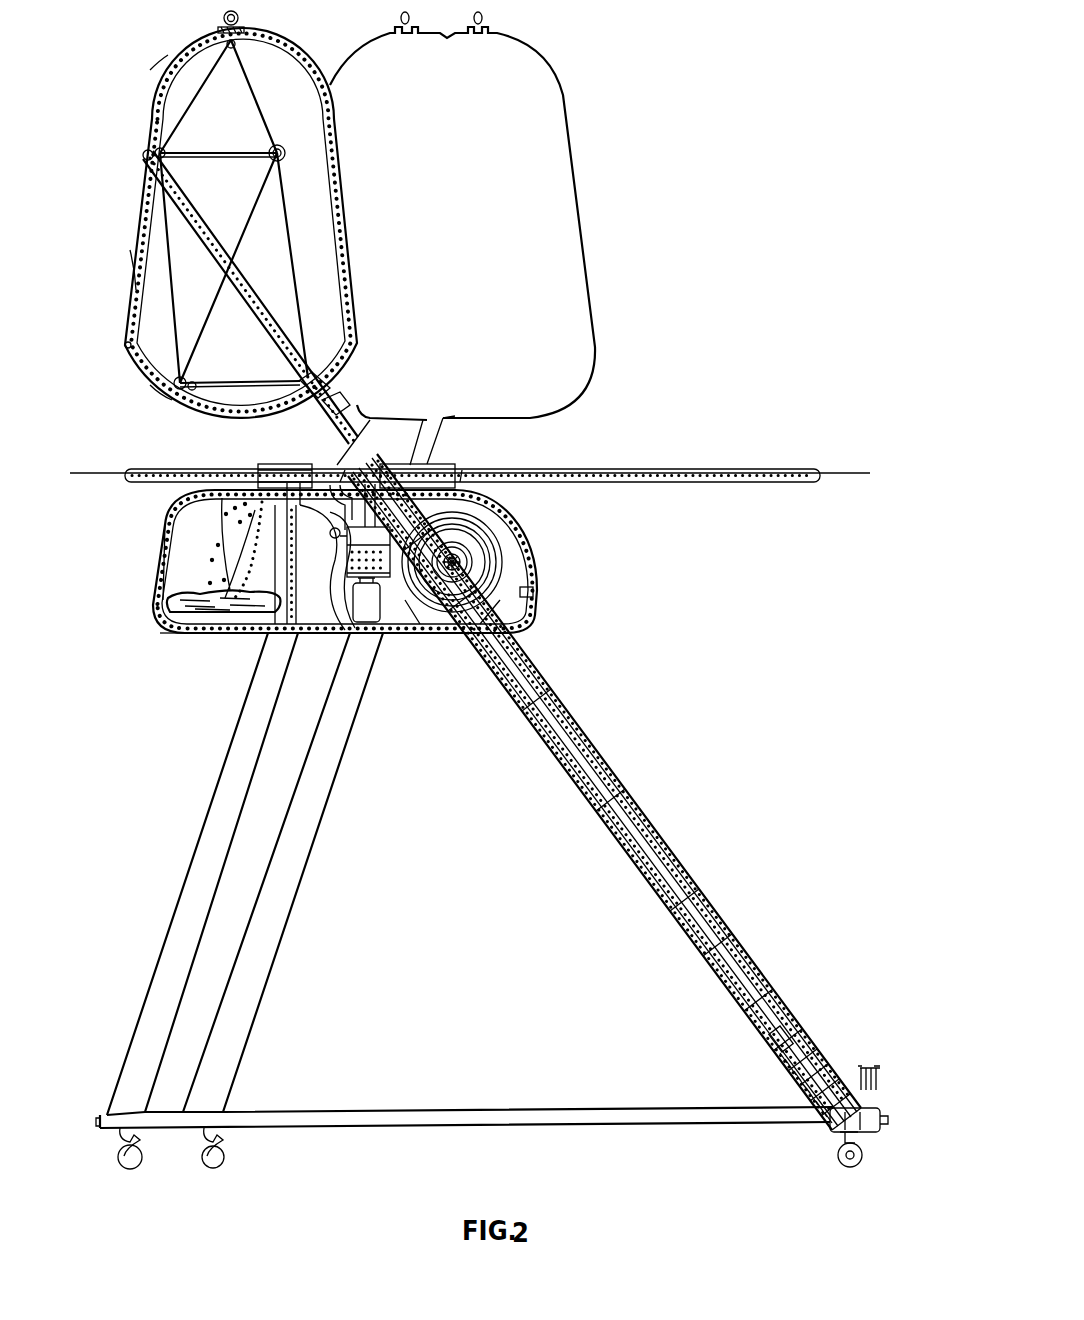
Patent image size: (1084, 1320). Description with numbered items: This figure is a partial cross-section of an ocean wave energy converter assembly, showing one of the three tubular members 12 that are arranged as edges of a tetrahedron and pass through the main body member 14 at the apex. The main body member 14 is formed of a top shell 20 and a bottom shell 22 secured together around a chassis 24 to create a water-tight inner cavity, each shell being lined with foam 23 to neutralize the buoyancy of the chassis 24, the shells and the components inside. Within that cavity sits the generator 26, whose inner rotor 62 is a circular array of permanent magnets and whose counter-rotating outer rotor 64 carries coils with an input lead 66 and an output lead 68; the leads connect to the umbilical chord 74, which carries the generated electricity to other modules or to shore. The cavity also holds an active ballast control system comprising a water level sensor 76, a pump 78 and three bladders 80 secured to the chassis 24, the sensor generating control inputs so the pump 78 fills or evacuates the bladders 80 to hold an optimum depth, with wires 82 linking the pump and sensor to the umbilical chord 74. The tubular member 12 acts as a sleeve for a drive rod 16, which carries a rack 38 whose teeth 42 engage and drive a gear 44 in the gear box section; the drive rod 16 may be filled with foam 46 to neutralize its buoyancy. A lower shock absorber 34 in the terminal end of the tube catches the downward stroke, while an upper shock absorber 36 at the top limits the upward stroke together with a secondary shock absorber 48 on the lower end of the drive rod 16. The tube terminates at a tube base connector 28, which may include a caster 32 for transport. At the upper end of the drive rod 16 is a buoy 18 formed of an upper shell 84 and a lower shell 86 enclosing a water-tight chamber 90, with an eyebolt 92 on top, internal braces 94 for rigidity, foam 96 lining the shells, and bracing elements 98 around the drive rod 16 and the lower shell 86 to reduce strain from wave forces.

The tubular member 12 is at (618, 815).
The main body member 14 is at (513, 517).
The drive rod 16 is at (665, 890).
The buoy 18 is at (300, 50).
The top shell 20 is at (170, 578).
The bottom shell 22 is at (205, 633).
The foam 23 is at (180, 633).
The chassis 24 is at (480, 468).
The generator 26 is at (498, 536).
The tube base connector 28 is at (884, 1122).
The caster 32 is at (837, 1155).
The lower shock absorber 34 is at (805, 1095).
The upper shock absorber 36 is at (516, 702).
The rack 38 is at (649, 841).
The teeth 42 is at (585, 737).
The gear 44 is at (517, 605).
The foam 46 is at (552, 744).
The secondary shock absorber 48 is at (768, 1048).
The inner rotor 62 is at (475, 565).
The outer rotor 64 is at (488, 552).
The input lead 66 is at (275, 635).
The output lead 68 is at (292, 635).
The umbilical chord 74 is at (835, 470).
The water level sensor 76 is at (335, 625).
The pump 78 is at (384, 633).
The bladder 80 is at (126, 345).
The wires 82 is at (288, 517).
The upper shell 84 is at (150, 74).
The lower shell 86 is at (157, 400).
The water-tight chamber 90 is at (194, 215).
The eyebolt 92 is at (222, 17).
The internal braces 94 is at (207, 148).
The foam 96 is at (146, 256).
The bracing elements 98 is at (322, 416).